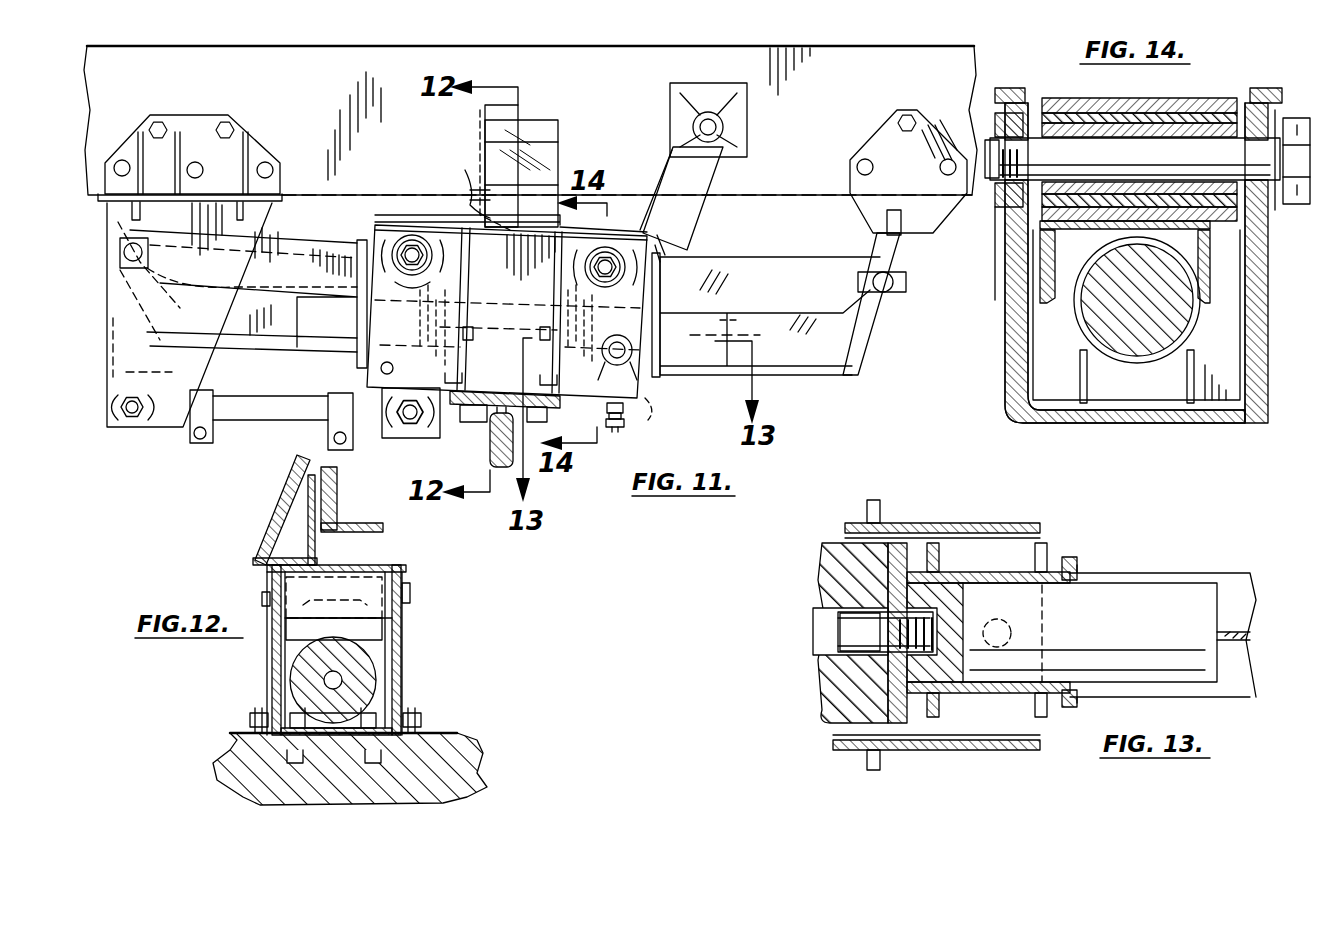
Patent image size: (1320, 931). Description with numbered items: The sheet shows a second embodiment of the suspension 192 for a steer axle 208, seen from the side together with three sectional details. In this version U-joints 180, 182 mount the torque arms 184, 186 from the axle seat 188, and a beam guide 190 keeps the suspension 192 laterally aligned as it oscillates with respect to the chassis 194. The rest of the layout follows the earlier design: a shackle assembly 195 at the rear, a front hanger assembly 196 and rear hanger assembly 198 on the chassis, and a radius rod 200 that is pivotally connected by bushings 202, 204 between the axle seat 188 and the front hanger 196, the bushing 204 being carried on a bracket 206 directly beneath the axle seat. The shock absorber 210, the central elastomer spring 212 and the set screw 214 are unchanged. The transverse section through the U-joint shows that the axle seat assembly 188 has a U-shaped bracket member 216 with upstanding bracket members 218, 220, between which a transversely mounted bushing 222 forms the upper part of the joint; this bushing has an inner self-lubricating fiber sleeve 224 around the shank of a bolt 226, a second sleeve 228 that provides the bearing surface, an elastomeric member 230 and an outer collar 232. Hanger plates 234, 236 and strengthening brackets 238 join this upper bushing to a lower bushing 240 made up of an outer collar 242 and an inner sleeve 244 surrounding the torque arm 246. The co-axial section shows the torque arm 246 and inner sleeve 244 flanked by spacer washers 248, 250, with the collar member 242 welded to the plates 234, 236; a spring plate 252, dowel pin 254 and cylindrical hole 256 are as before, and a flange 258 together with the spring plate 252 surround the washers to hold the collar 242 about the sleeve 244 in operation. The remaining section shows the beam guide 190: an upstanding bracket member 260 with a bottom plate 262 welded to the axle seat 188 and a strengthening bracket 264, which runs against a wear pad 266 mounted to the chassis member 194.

In FIG. 11, the U-joint 180 is at (446, 219).
In FIG. 12, the U-joint 180 is at (376, 644).
In FIG. 11, the U-joint 182 is at (622, 215).
In FIG. 14, the U-joint 182 is at (1225, 92).
In FIG. 11, the torque arm 184 is at (248, 340).
In FIG. 11, the torque arm 186 is at (800, 372).
In FIG. 13, the torque arm 186 is at (1243, 567).
In FIG. 11, the axle seat 188 is at (365, 216).
In FIG. 12, the axle seat 188 is at (258, 677).
In FIG. 13, the axle seat 188 is at (828, 763).
In FIG. 14, the axle seat 188 is at (1014, 438).
In FIG. 11, the beam guide 190 is at (519, 145).
In FIG. 12, the beam guide 190 is at (298, 524).
In FIG. 11, the suspension 192 is at (685, 400).
In FIG. 11, the chassis 194 is at (784, 195).
In FIG. 12, the chassis 194 is at (385, 528).
In FIG. 11, the shackle assembly 195 is at (915, 262).
In FIG. 11, the front hanger assembly 196 is at (185, 432).
In FIG. 11, the rear hanger assembly 198 is at (870, 210).
In FIG. 11, the radius rod 200 is at (268, 416).
In FIG. 11, the bushing 202 is at (107, 430).
In FIG. 11, the bushing 204 is at (418, 440).
In FIG. 11, the bracket 206 is at (490, 450).
In FIG. 11, the steer axle 208 is at (490, 468).
In FIG. 12, the steer axle 208 is at (482, 760).
In FIG. 11, the shock absorber 210 is at (695, 208).
In FIG. 11, the elastomer spring 212 is at (504, 292).
In FIG. 12, the elastomer spring 212 is at (360, 668).
In FIG. 13, the elastomer spring 212 is at (830, 578).
In FIG. 11, the set screw 214 is at (628, 430).
In FIG. 12, the U-shaped bracket member 216 is at (388, 682).
In FIG. 13, the U-shaped bracket member 216 is at (850, 522).
In FIG. 14, the U-shaped bracket member 216 is at (1180, 423).
In FIG. 14, the upstanding bracket member 218 is at (1035, 88).
In FIG. 14, the upstanding bracket member 220 is at (1250, 92).
In FIG. 14, the transversely mounted bushing 222 is at (1043, 242).
In FIG. 14, the inner self-lubricating fiber sleeve 224 is at (1120, 138).
In FIG. 14, the bolt 226 is at (1295, 112).
In FIG. 14, the second sleeve 228 is at (1052, 128).
In FIG. 14, the elastomeric member 230 is at (1190, 130).
In FIG. 14, the outer collar 232 is at (1055, 98).
In FIG. 11, the hanger plate 234 is at (578, 407).
In FIG. 13, the hanger plate 234 is at (940, 723).
In FIG. 14, the hanger plate 234 is at (1128, 410).
In FIG. 11, the hanger plate 236 is at (645, 395).
In FIG. 13, the hanger plate 236 is at (1048, 718).
In FIG. 14, the strengthening bracket 238 is at (1048, 290).
In FIG. 13, the lower bushing 240 is at (1015, 560).
In FIG. 14, the lower bushing 240 is at (1067, 337).
In FIG. 13, the outer collar 242 is at (970, 570).
In FIG. 14, the outer collar 242 is at (1078, 340).
In FIG. 13, the inner sleeve 244 is at (1020, 592).
In FIG. 14, the inner sleeve 244 is at (1090, 365).
In FIG. 13, the torque arm 246 is at (1148, 590).
In FIG. 14, the torque arm 246 is at (1185, 328).
In FIG. 13, the spacer washer 248 is at (905, 545).
In FIG. 13, the spacer washer 250 is at (1068, 558).
In FIG. 13, the spring plate 252 is at (898, 723).
In FIG. 13, the dowel pin 254 is at (850, 628).
In FIG. 13, the cylindrical hole 256 is at (830, 650).
In FIG. 13, the flange 258 is at (1078, 703).
In FIG. 11, the upstanding bracket member 260 is at (560, 120).
In FIG. 12, the upstanding bracket member 260 is at (316, 550).
In FIG. 11, the bottom plate 262 is at (460, 168).
In FIG. 12, the bottom plate 262 is at (258, 565).
In FIG. 11, the strengthening bracket 264 is at (488, 155).
In FIG. 12, the strengthening bracket 264 is at (278, 518).
In FIG. 11, the wear pad 266 is at (540, 110).
In FIG. 12, the wear pad 266 is at (340, 490).